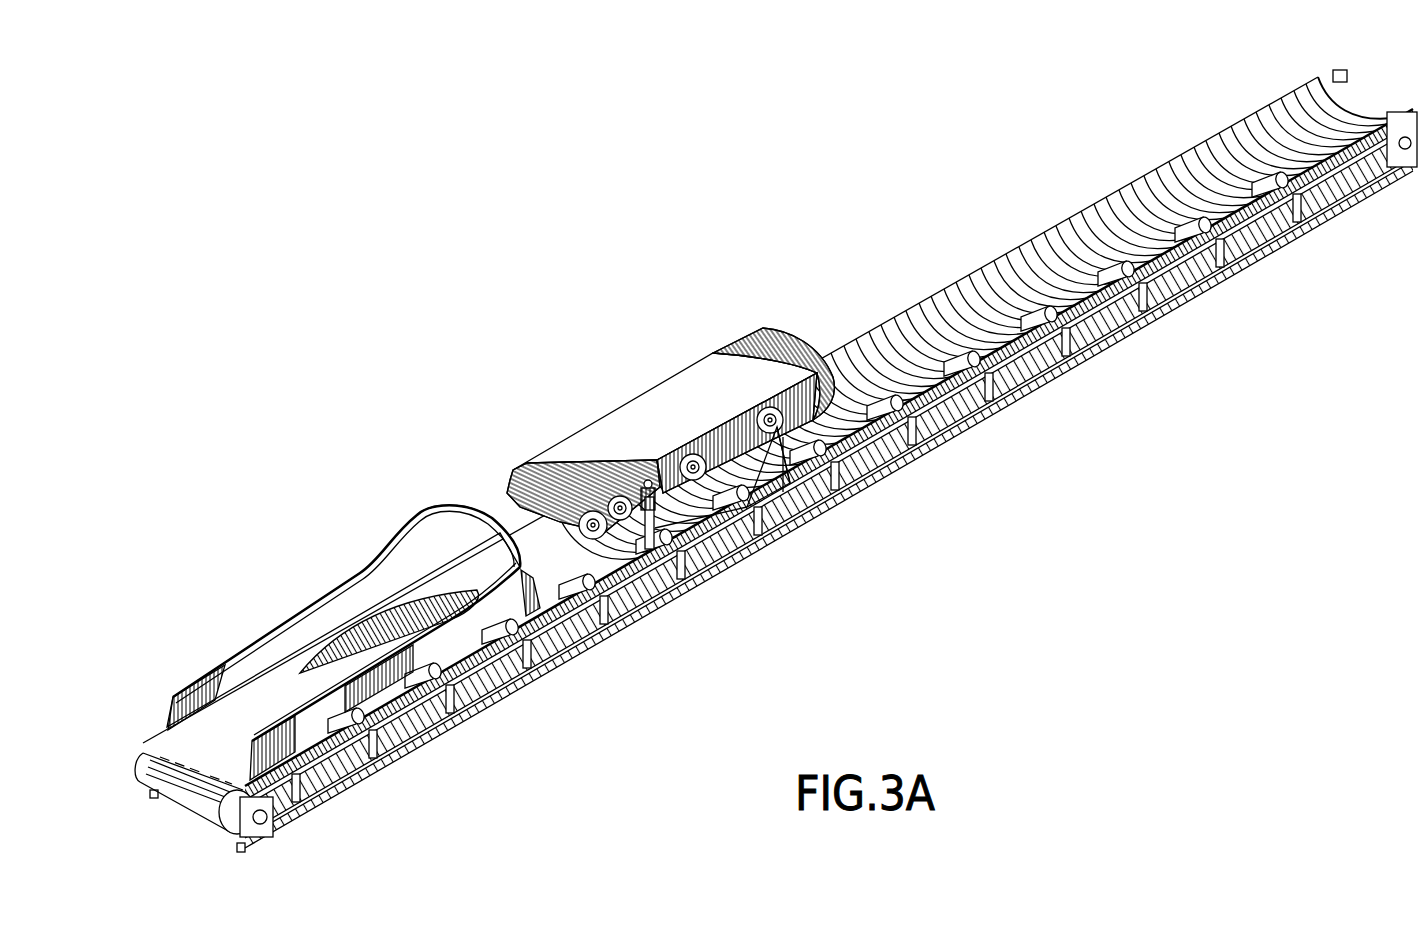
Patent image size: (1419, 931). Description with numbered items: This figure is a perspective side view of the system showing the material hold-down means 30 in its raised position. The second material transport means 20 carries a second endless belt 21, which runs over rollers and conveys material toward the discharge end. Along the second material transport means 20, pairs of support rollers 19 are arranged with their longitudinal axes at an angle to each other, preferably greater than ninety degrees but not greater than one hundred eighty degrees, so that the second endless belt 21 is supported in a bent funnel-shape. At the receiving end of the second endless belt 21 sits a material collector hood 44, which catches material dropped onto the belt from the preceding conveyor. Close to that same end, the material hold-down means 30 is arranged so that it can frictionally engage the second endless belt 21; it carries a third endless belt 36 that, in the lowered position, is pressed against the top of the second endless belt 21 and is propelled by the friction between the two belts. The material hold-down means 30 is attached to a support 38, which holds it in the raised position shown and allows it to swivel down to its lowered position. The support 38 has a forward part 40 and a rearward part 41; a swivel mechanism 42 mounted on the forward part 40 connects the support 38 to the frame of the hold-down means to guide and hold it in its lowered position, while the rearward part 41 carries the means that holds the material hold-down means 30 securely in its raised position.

The support rollers 19 is at (585, 606).
The second material transport means 20 is at (962, 460).
The second endless belt 21 is at (1283, 122).
The material hold-down means 30 is at (714, 463).
The third endless belt 36 is at (697, 385).
The support 38 is at (770, 502).
The forward part 40 is at (648, 558).
The rearward part 41 is at (795, 463).
The swivel mechanism 42 is at (700, 522).
The material collector hood 44 is at (422, 557).